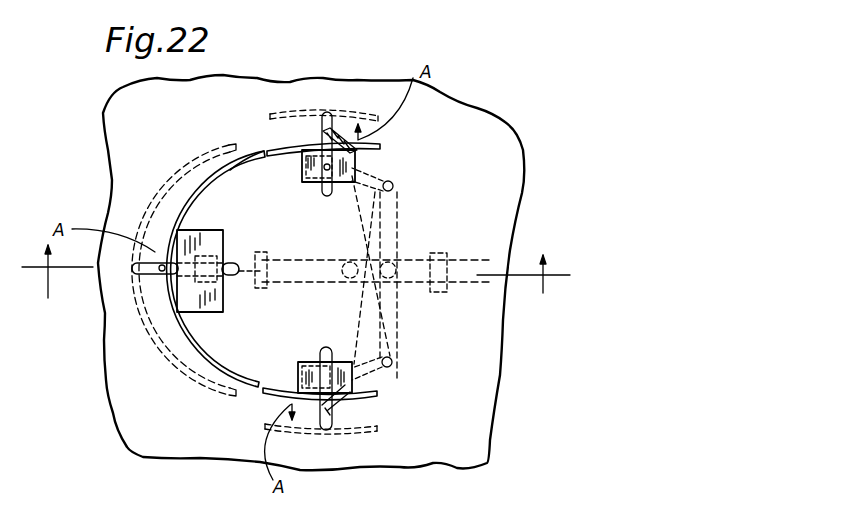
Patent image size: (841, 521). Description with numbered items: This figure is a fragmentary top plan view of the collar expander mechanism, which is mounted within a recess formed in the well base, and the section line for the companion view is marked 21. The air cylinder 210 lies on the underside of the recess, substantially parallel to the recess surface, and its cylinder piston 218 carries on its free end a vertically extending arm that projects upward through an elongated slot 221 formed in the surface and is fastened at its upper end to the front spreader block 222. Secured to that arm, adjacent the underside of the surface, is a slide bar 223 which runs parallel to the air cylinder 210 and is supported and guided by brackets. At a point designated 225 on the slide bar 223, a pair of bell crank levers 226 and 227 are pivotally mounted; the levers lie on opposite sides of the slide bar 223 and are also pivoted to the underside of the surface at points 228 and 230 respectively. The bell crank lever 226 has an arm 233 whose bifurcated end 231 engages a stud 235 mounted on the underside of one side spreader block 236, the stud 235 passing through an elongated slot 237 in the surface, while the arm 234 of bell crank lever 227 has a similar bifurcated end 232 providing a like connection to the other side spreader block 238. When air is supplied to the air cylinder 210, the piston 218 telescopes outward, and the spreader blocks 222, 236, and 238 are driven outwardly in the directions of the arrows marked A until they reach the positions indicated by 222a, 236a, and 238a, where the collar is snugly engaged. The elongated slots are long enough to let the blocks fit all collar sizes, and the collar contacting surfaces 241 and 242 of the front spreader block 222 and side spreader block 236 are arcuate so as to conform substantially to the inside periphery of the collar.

The section line 21- 21 is at (296, 271).
The air cylinder 210 is at (294, 259).
The cylinder piston 218 is at (250, 292).
The elongated slot 221 is at (143, 270).
The front spreader block 222 is at (198, 233).
The position of front spreader block 222a is at (147, 333).
The slide bar 223 is at (251, 246).
The pivot point 225 is at (398, 262).
The bell crank lever 226 is at (397, 225).
The bell crank lever 227 is at (398, 316).
The pivot point 228 is at (394, 182).
The pivot point 230 is at (395, 366).
The bifurcated end 231 is at (302, 168).
The bifurcated end 232 is at (308, 362).
The arm 233 is at (362, 170).
The arm 234 is at (380, 360).
The stud 235 is at (297, 143).
The side spreader block 236 is at (378, 143).
The position of side spreader block 236a is at (357, 106).
The elongated slot 237 is at (328, 148).
The side spreader block 238 is at (368, 398).
The position of side spreader block 238a is at (355, 433).
The collar contacting surface 241 is at (175, 213).
The collar contacting surface 242 is at (279, 146).